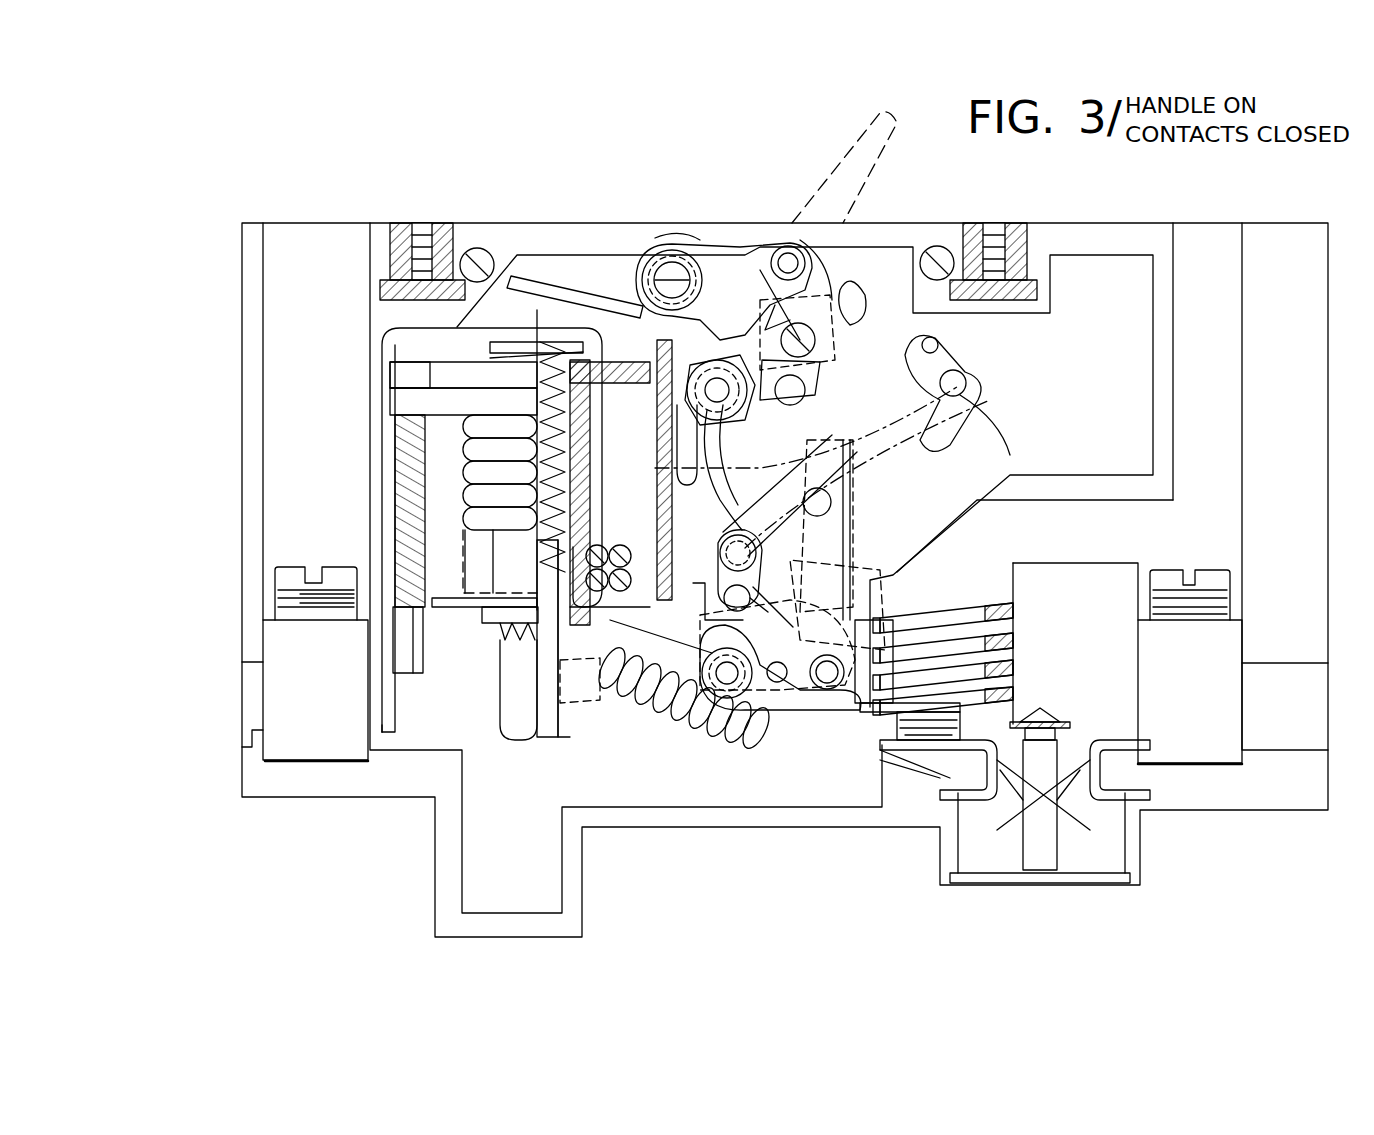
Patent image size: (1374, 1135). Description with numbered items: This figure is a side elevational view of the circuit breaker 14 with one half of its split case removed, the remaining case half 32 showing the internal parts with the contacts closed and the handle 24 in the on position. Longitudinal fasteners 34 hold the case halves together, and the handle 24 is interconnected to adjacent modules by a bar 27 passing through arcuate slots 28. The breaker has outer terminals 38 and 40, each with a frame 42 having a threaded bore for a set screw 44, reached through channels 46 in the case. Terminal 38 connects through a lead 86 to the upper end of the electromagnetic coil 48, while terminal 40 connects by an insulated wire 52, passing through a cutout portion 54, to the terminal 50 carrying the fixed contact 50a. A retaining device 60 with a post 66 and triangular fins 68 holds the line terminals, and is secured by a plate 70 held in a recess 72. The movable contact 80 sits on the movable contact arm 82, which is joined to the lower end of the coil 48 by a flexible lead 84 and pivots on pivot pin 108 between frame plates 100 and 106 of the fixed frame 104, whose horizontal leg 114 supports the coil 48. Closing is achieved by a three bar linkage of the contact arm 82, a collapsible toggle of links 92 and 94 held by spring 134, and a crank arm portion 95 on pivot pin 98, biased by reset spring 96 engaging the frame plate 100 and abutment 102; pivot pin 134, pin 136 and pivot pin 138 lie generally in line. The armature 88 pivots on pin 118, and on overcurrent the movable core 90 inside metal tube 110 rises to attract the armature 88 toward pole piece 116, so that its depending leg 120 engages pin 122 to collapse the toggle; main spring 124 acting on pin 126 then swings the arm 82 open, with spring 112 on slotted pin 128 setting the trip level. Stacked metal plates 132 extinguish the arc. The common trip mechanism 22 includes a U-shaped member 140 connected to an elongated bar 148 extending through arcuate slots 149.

The circuit breaker 14 is at (418, 130).
The common trip mechanism 22 is at (953, 430).
The handle 24 is at (898, 115).
The bar 27 is at (812, 362).
The arcuate slots 28 is at (858, 318).
The case half 32 is at (1165, 222).
The fasteners 34 is at (473, 250).
The outer terminal 38 is at (384, 742).
The outer terminal 40 is at (1120, 792).
The frame 42 is at (300, 697).
The set screw 44 is at (290, 585).
The channels 46 is at (272, 245).
The electromagnetic coil 48 is at (443, 487).
The terminal 50 is at (945, 792).
The fixed contact 50a is at (900, 760).
The insulated wire 52 is at (1035, 770).
The cutout portion 54 is at (960, 845).
The retaining device 60 is at (965, 895).
The post 66 is at (1040, 835).
The triangular fins 68 is at (1013, 805).
The plate 70 is at (1050, 725).
The recess 72 is at (1045, 718).
The movable contact 80 is at (958, 715).
The movable contact arm 82 is at (860, 705).
The flexible lead 84 is at (686, 735).
The lead 86 is at (398, 445).
The armature 88 is at (540, 288).
The movable core 90 is at (568, 507).
The toggle link 92 is at (870, 565).
The toggle link 94 is at (912, 542).
The crank arm portion 95 is at (832, 262).
The reset spring 96 is at (742, 250).
The pivot pin 98 is at (778, 248).
The frame plate 100 is at (718, 258).
The abutment 102 is at (815, 338).
The fixed frame 104 is at (590, 420).
The frame plate 106 is at (660, 718).
The pivot pin 108 is at (727, 690).
The metal tube 110 is at (598, 722).
The spring 112 is at (650, 245).
The horizontal leg 114 is at (608, 617).
The pole piece 116 is at (410, 322).
The pin 118 is at (706, 380).
The depending leg 120 is at (680, 597).
The pin 122 is at (750, 600).
The main spring 124 is at (628, 660).
The pin 126 is at (780, 683).
The slotted pin 128 is at (645, 262).
The metal plates 132 is at (1020, 648).
The pivot pin 134 is at (838, 655).
The pin 136 is at (832, 505).
The pivot pin 138 is at (802, 395).
The U-shaped member 140 is at (978, 405).
The elongated bar 148 is at (968, 383).
The arcuate slots 149 is at (952, 350).